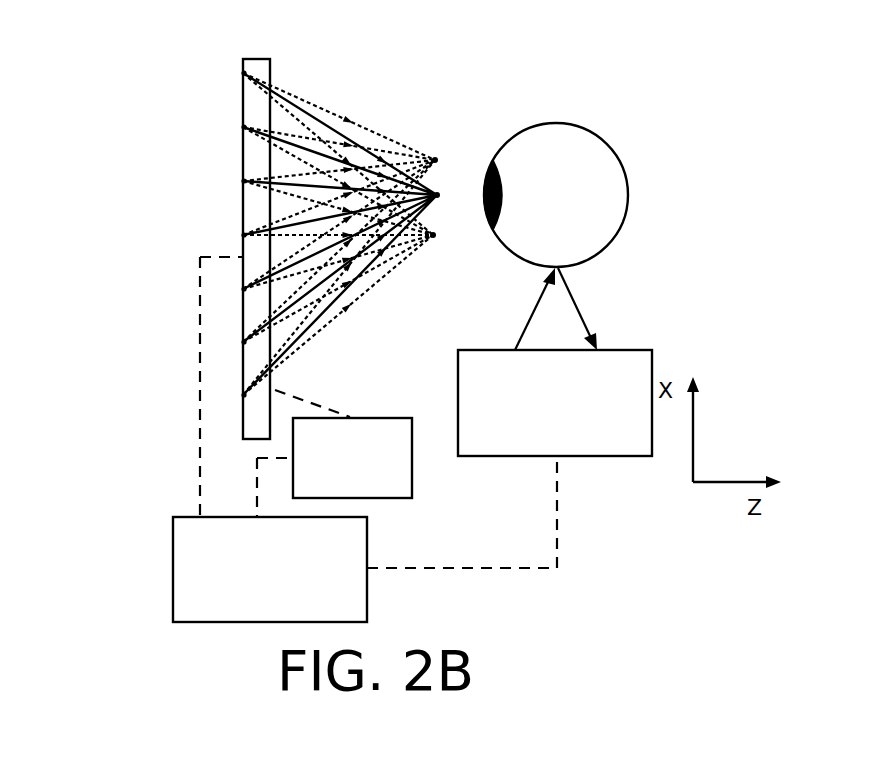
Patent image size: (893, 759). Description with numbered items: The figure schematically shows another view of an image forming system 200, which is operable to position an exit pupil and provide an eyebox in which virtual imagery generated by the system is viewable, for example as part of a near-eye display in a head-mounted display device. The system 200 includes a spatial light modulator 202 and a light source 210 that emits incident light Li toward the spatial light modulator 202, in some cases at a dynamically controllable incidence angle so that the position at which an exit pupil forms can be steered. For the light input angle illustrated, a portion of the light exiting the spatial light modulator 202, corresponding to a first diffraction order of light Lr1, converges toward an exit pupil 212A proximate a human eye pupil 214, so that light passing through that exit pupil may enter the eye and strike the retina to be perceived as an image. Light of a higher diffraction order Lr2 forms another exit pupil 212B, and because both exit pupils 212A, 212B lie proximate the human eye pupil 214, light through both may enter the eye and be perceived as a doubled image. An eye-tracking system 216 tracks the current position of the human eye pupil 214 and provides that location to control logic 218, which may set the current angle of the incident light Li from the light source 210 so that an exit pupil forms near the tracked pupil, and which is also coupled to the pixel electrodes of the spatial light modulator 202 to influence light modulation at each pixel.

The image forming system 200 is at (92, 254).
The spatial light modulator 202 is at (241, 92).
The light source 210 is at (352, 458).
The exit pupil 212A is at (443, 195).
The exit pupil 212B is at (440, 160).
The human eye pupil 214 is at (483, 212).
The eye-tracking system 216 is at (555, 362).
The control logic 218 is at (270, 569).
The first diffraction order of light Lr1 is at (432, 207).
The higher diffraction order of light Lr2 is at (409, 137).
The incident light Li is at (326, 395).